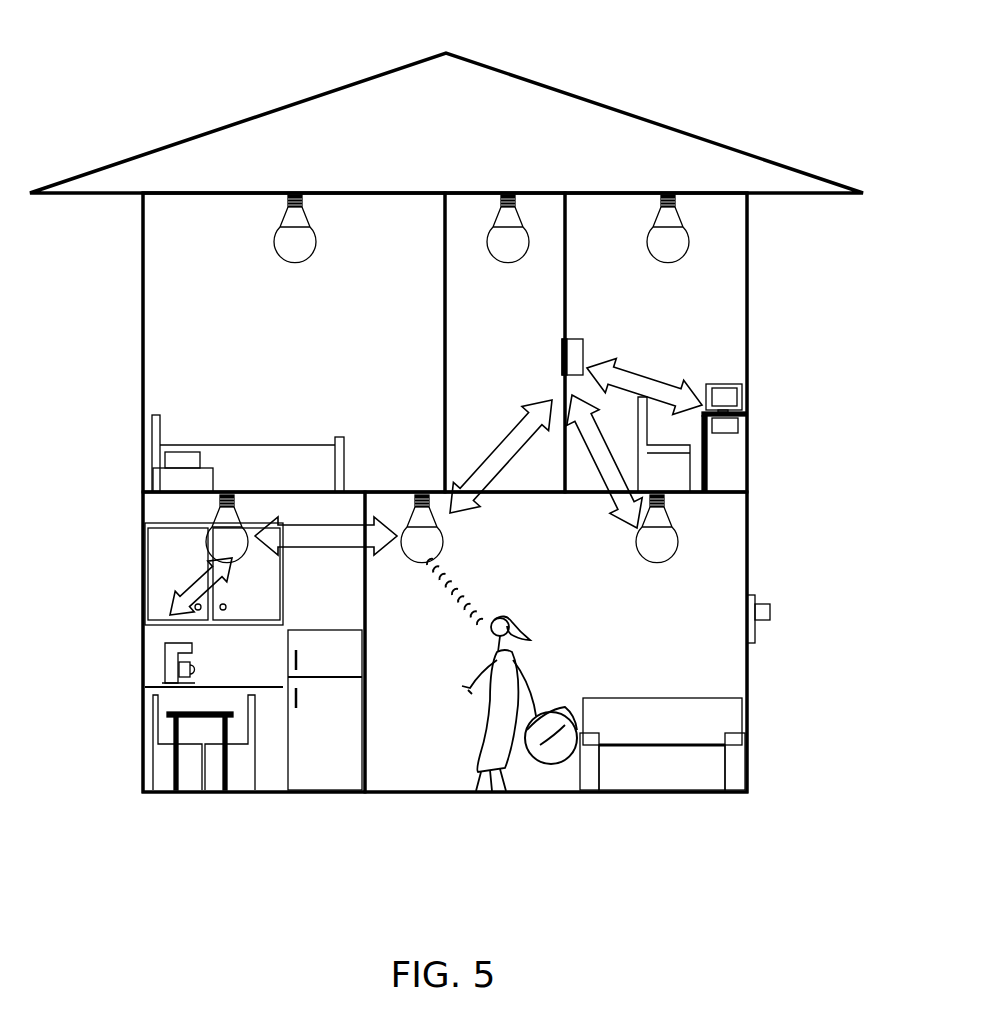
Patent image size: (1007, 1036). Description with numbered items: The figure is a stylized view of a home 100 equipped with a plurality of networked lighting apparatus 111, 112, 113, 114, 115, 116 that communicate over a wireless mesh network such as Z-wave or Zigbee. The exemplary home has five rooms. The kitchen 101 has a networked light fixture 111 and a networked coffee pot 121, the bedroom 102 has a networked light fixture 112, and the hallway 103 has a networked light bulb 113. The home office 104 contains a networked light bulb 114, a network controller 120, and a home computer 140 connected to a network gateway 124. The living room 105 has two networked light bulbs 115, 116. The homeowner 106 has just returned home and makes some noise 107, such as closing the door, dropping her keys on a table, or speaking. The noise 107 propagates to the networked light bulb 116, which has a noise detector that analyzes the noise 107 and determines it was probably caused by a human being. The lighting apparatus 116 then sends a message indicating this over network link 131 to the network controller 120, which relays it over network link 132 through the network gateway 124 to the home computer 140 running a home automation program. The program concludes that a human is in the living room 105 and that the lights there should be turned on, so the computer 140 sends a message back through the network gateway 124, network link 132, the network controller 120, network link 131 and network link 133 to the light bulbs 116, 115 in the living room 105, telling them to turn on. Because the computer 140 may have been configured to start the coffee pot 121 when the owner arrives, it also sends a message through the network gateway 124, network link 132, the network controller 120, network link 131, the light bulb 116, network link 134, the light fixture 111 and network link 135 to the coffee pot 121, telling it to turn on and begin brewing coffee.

The home 100 is at (150, 152).
The kitchen 101 is at (304, 583).
The bedroom 102 is at (280, 342).
The hallway 103 is at (485, 375).
The home office 104 is at (659, 330).
The living room 105 is at (549, 545).
The homeowner 106 is at (503, 731).
The noise 107 is at (452, 588).
The networked light fixture 111 is at (215, 512).
The networked light fixture 112 is at (280, 233).
The networked light bulb 113 is at (493, 225).
The networked light bulb 114 is at (688, 238).
The networked light bulb 115 is at (680, 547).
The networked light bulb 116 is at (442, 549).
The network controller 120 is at (574, 338).
The networked coffee pot 121 is at (164, 663).
The network gateway 124 is at (738, 432).
The network link 131 is at (492, 447).
The network link 132 is at (647, 377).
The network link 133 is at (617, 460).
The network link 134 is at (325, 525).
The network link 135 is at (186, 597).
The home computer 140 is at (742, 402).